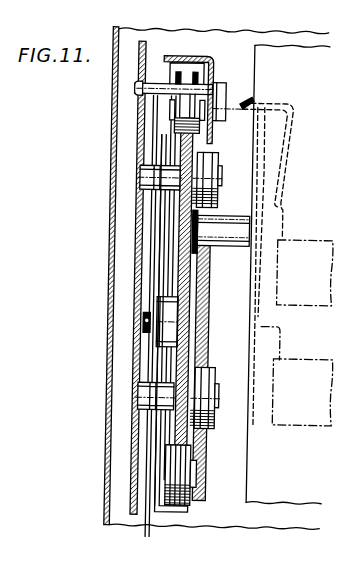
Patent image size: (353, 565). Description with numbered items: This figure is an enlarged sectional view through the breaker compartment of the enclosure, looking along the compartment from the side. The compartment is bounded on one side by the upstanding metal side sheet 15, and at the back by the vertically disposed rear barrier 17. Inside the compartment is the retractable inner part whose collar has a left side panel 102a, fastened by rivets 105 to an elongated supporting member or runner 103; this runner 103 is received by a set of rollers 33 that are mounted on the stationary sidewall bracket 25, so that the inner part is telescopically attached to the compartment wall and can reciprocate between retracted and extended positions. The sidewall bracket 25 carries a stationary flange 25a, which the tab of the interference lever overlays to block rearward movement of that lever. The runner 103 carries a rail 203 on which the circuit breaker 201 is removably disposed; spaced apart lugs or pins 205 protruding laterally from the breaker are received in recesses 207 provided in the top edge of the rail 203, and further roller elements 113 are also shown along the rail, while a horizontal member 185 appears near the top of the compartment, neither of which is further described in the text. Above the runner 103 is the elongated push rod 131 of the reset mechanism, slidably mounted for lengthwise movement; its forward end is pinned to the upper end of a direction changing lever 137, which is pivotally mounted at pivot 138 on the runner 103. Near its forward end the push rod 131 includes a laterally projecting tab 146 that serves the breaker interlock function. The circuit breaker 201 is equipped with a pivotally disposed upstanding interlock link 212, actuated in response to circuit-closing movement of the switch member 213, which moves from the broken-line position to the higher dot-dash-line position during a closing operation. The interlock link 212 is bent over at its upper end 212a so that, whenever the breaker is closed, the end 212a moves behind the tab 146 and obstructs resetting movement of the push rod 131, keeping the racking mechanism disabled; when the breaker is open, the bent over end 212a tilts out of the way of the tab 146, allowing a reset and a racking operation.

The side sheet 15 is at (111, 180).
The rear barrier 17 is at (236, 525).
The sidewall bracket 25 is at (167, 283).
The stationary flange 25a is at (178, 512).
The rollers 33 is at (197, 127).
The left side panel 102a is at (136, 438).
The runner 103 is at (178, 246).
The rivets 105 is at (145, 173).
The roller 113 is at (214, 197).
The push rod 131 is at (206, 56).
The direction changing lever 137 is at (154, 370).
The pivot 138 is at (143, 325).
The tab 146 is at (216, 91).
The rail 185 is at (153, 96).
The circuit breaker 201 is at (281, 505).
The rail 203 is at (211, 326).
The lugs or pins 205 is at (210, 246).
The recesses 207 is at (208, 215).
The interlock link 212 is at (281, 150).
The bent over upper end 212a is at (248, 96).
The switch member 213 is at (305, 445).